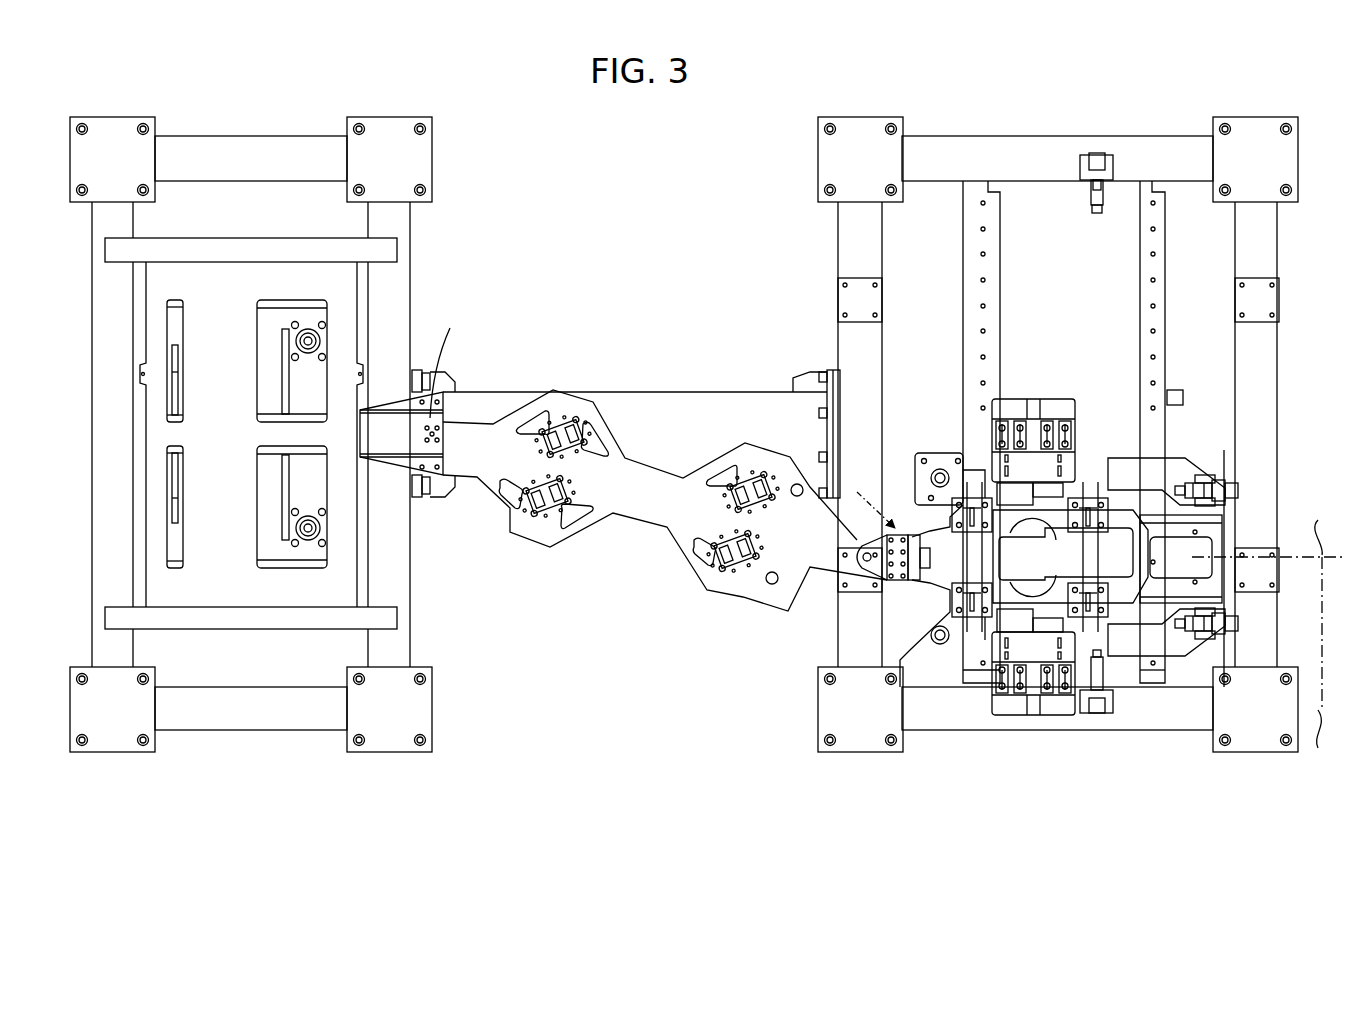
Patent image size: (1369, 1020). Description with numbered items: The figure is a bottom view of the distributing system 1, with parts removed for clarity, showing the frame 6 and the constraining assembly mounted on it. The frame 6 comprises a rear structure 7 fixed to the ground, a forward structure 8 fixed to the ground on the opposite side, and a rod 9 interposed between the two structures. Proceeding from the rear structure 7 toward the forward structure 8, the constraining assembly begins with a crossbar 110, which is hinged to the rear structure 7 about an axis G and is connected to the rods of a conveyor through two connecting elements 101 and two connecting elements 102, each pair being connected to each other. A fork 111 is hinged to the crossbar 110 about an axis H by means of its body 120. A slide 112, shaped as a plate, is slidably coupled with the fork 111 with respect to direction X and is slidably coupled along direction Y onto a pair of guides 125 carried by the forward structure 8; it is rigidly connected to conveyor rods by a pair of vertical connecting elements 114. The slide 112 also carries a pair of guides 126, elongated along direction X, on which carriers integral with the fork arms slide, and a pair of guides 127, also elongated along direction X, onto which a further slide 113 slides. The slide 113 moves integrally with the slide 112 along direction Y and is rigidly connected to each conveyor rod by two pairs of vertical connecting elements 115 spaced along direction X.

The distributing system 1 is at (568, 610).
The frame 6 is at (716, 220).
The rear structure 7 is at (272, 170).
The forward structure 8 is at (1112, 128).
The rod 9 is at (680, 392).
The connecting elements 101 is at (540, 432).
The connecting elements 102 is at (718, 486).
The crossbar 110 is at (523, 330).
The fork 111 is at (905, 530).
The slide 112 is at (1170, 462).
The slide 113 is at (1120, 505).
The vertical connecting elements 114 is at (1020, 425).
The vertical connecting elements 115 is at (930, 535).
The body 120 is at (930, 565).
The guides 125 is at (1145, 268).
The guides 126 is at (1043, 448).
The guides 127 is at (1200, 500).